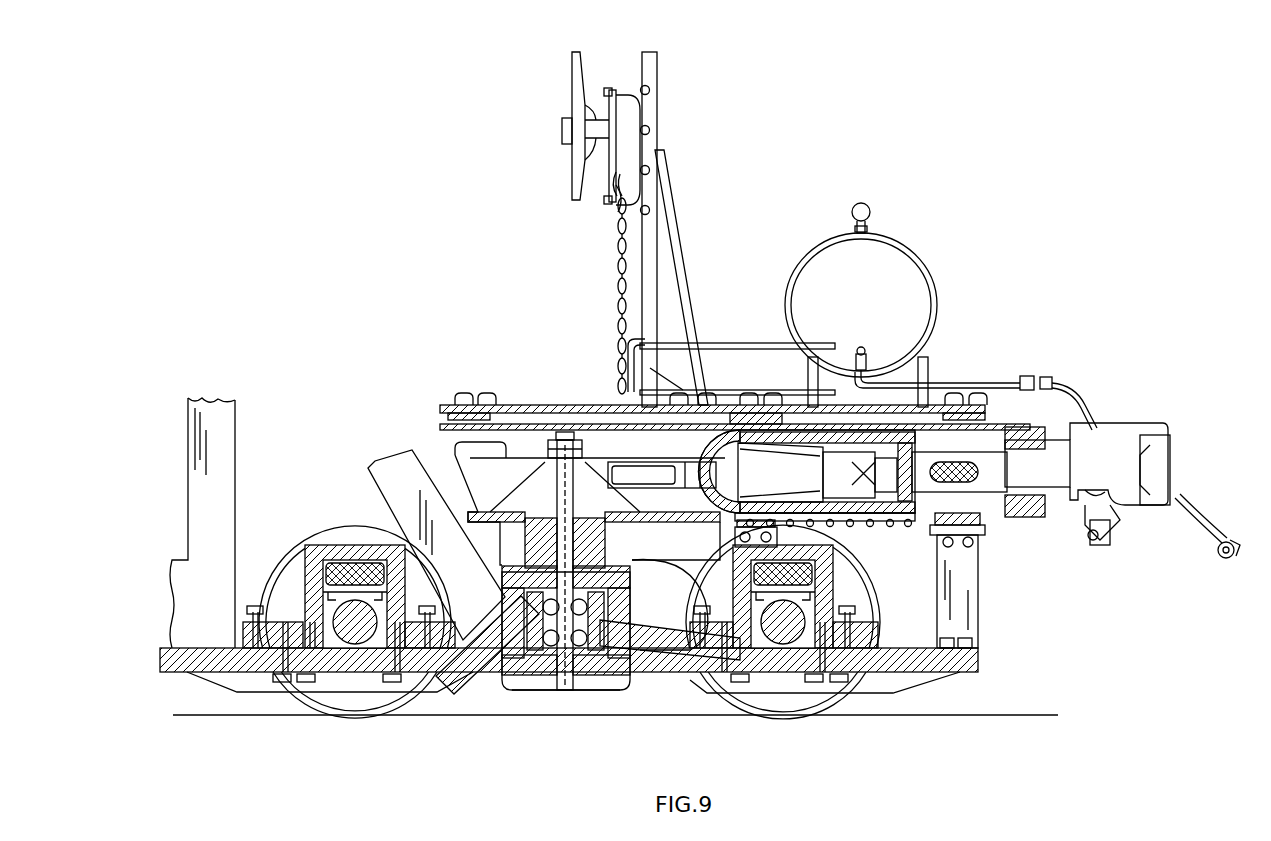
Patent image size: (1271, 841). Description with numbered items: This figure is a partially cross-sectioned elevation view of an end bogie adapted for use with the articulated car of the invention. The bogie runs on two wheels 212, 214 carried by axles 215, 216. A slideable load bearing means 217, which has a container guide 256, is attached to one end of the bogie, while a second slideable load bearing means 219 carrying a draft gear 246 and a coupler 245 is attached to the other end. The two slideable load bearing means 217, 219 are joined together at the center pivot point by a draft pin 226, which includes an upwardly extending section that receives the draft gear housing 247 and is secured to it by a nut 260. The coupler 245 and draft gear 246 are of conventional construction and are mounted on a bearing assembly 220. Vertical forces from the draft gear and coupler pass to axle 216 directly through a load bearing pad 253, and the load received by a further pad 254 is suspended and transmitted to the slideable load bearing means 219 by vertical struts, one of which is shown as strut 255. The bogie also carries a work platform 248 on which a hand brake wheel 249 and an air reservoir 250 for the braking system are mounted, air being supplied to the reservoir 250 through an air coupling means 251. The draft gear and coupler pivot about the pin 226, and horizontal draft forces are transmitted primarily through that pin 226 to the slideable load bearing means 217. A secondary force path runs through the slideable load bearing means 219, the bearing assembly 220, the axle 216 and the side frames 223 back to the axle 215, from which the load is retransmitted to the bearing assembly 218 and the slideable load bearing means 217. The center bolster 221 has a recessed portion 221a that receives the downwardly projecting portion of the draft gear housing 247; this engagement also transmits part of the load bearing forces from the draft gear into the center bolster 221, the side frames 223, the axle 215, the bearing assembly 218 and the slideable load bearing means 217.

The wheel 212 is at (380, 705).
The wheel 214 is at (752, 705).
The axle 215 is at (322, 612).
The axle 216 is at (805, 608).
The slideable load bearing means 217 is at (187, 672).
The bearing assembly 218 is at (338, 536).
The slideable load bearing means 219 is at (975, 666).
The bearing assembly 220 is at (836, 537).
The center bolster 221 is at (625, 558).
The recessed portion 221a is at (470, 682).
The side frames 223 is at (638, 675).
The draft pin 226 is at (552, 545).
The coupler 245 is at (1158, 430).
The draft gear 246 is at (750, 456).
The draft gear housing 247 is at (456, 468).
The work platform 248 is at (541, 404).
The hand brake wheel 249 is at (570, 192).
The air reservoir 250 is at (937, 252).
The air coupling means 251 is at (1238, 560).
The load bearing pad 253 is at (790, 498).
The pad 254 is at (990, 527).
The vertical strut 255 is at (978, 583).
The container guide 256 is at (218, 399).
The nut 260 is at (581, 430).